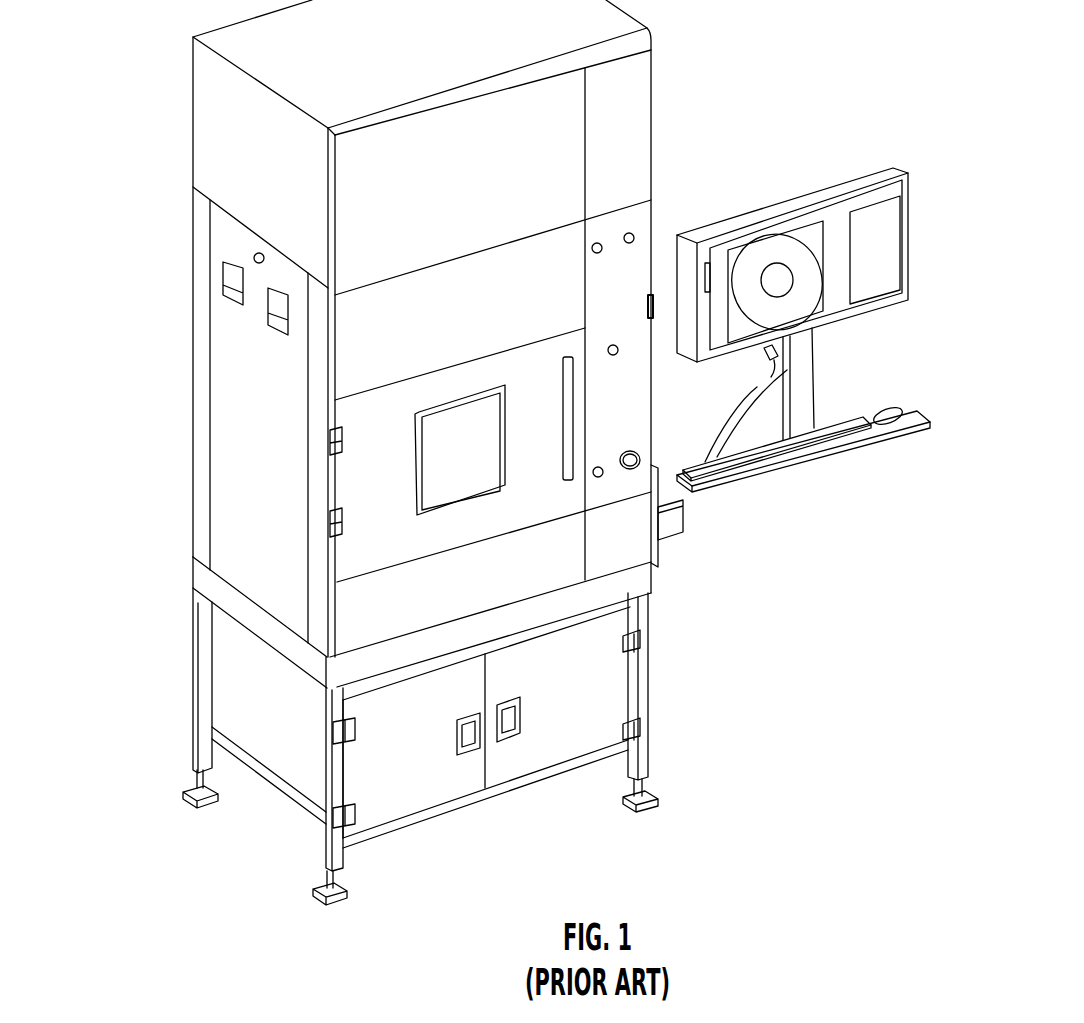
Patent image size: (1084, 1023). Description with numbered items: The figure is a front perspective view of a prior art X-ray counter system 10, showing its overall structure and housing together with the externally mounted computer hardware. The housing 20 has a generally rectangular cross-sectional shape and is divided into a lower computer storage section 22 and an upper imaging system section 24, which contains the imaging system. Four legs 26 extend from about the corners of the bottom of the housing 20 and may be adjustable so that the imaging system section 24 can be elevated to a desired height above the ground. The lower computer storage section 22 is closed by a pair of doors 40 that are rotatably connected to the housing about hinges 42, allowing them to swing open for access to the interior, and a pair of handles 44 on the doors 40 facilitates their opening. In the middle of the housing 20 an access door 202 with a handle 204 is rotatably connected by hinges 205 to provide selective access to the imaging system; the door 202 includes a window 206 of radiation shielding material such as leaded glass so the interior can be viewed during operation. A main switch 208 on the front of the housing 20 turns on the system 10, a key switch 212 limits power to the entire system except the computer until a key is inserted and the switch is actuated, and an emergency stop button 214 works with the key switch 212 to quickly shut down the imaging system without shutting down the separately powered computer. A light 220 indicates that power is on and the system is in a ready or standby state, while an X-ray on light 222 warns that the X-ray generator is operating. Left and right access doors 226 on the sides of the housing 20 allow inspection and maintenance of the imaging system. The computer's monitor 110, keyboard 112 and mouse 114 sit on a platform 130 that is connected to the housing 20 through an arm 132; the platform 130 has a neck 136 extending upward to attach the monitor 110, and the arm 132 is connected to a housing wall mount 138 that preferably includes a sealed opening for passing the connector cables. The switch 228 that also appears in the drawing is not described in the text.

The X-ray counter system 10 is at (102, 486).
The housing 20 is at (662, 95).
The lower computer storage section 22 is at (187, 587).
The upper imaging system section 24 is at (187, 37).
The legs 26 is at (318, 895).
The doors 40 is at (555, 747).
The hinges 42 is at (643, 640).
The handles 44 is at (472, 753).
The monitor 110 is at (853, 188).
The keyboard 112 is at (836, 428).
The mouse 114 is at (897, 412).
The platform 130 is at (903, 436).
The arm 132 is at (697, 512).
The neck 136 is at (778, 377).
The housing wall mount 138 is at (653, 552).
The access door 202 is at (362, 563).
The handle 204 is at (563, 472).
The hinges 205 is at (340, 522).
The window 206 is at (433, 484).
The main switch 208 is at (613, 345).
The key switch 212 is at (603, 471).
The emergency stop button 214 is at (657, 452).
The light 220 is at (630, 233).
The X-ray on light 222 is at (597, 243).
The access doors 226 is at (230, 434).
The switch 228 is at (227, 272).